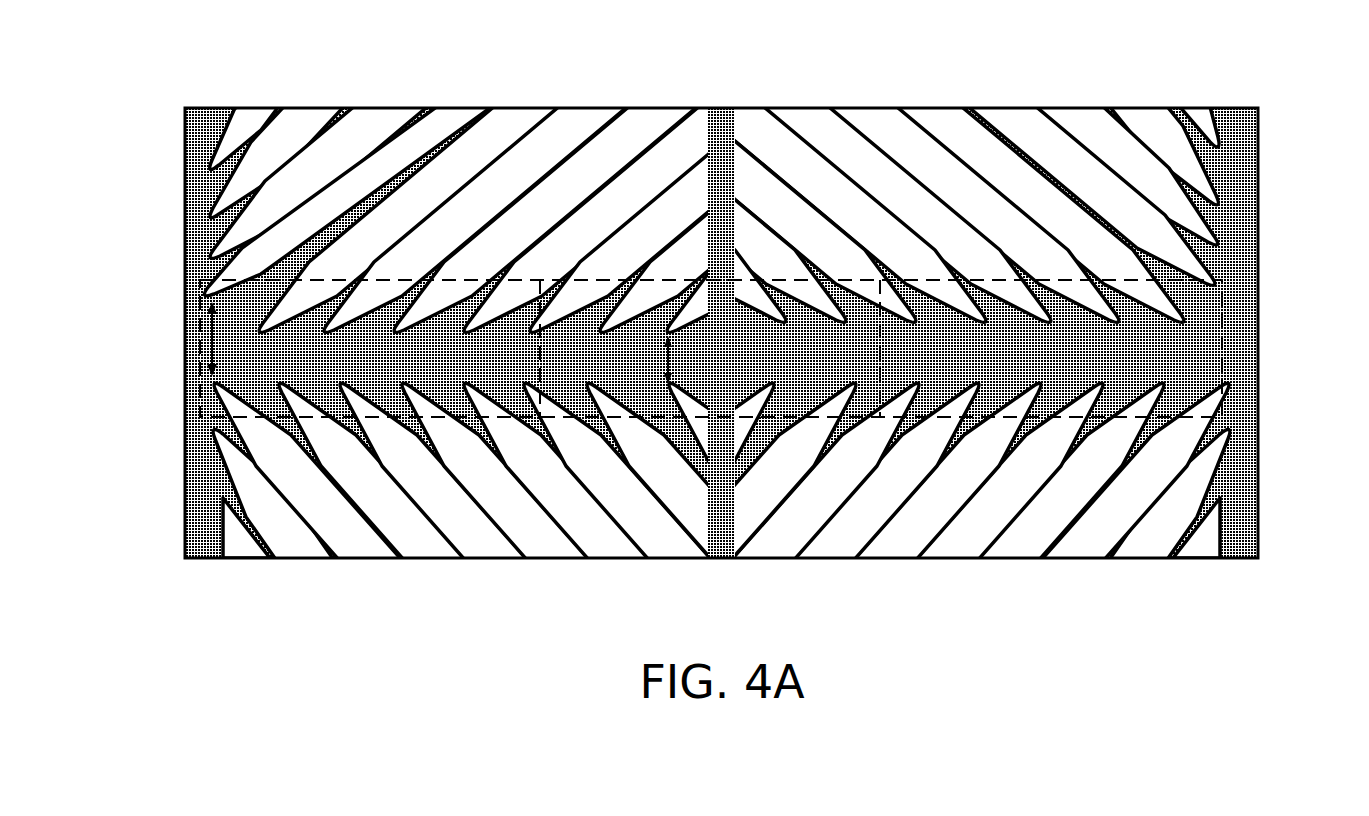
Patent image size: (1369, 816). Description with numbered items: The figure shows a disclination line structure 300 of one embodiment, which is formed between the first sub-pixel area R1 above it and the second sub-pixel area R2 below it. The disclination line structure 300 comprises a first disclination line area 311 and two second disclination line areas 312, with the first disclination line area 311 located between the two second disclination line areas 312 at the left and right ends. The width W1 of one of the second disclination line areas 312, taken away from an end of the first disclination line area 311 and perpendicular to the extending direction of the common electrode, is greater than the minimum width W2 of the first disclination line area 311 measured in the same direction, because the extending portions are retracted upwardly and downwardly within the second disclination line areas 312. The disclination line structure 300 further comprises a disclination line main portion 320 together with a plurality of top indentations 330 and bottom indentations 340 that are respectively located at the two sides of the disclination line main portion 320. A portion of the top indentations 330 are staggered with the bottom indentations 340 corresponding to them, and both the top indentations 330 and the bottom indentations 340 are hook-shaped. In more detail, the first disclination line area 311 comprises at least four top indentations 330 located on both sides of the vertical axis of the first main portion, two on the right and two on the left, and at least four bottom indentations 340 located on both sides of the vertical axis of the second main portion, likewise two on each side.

The disclination line structure 300 is at (728, 408).
The first disclination line area 311 is at (695, 360).
The second disclination line areas 312 is at (188, 358).
The disclination line main portion 320 is at (720, 378).
The top indentations 330 is at (368, 333).
The bottom indentations 340 is at (384, 392).
The width of the second disclination line area W1 is at (188, 333).
The minimum width of the first disclination line area W2 is at (641, 360).
The first sub-pixel area R1 is at (481, 202).
The second sub-pixel area R2 is at (480, 469).